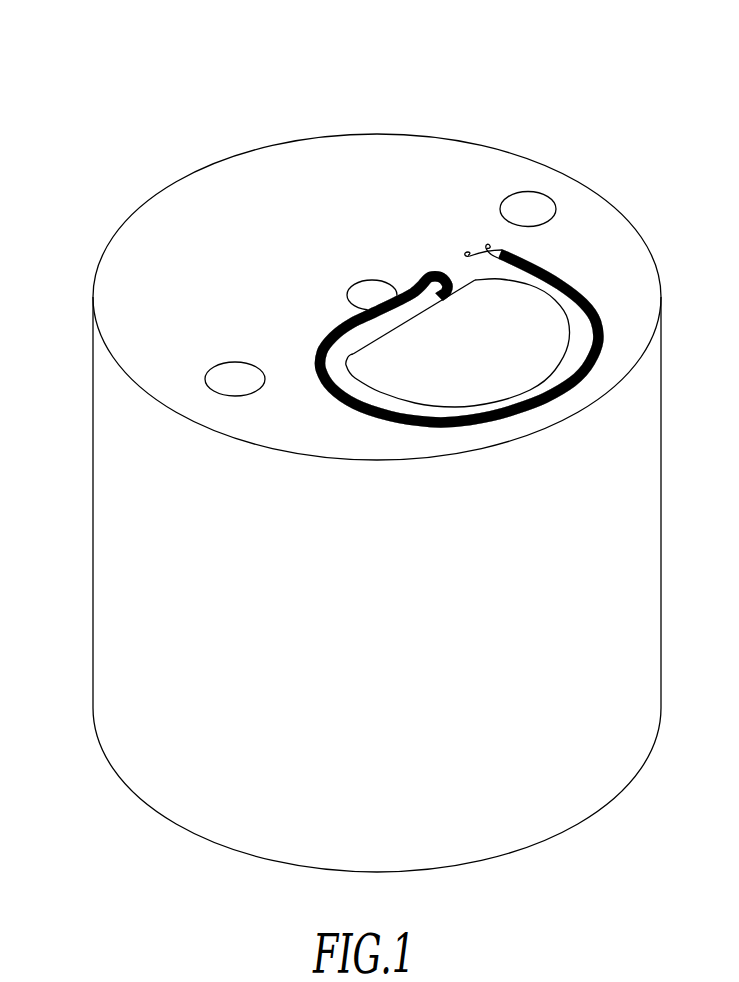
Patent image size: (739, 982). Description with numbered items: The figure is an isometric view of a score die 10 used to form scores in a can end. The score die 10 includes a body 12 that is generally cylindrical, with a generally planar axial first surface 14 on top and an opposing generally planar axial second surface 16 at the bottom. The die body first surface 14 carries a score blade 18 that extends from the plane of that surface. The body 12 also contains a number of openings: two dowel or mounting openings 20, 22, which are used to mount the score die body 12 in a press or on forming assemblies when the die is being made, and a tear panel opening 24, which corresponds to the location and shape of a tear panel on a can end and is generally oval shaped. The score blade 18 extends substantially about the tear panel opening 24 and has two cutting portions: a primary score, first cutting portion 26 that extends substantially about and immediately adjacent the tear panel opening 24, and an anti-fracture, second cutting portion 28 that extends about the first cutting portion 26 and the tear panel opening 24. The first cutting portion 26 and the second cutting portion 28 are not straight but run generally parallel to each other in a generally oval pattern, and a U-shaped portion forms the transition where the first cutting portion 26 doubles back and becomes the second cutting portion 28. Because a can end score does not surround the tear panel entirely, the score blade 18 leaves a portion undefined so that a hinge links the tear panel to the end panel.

The score die 10 is at (106, 105).
The score die body 12 is at (93, 457).
The axial first surface 14 is at (235, 172).
The axial second surface 16 is at (87, 764).
The score blade 18 is at (582, 290).
The dowel opening 20 is at (223, 362).
The dowel opening 22 is at (512, 197).
The tear panel opening 24 is at (471, 314).
The first cutting portion 26 is at (586, 347).
The second cutting portion 28 is at (564, 373).